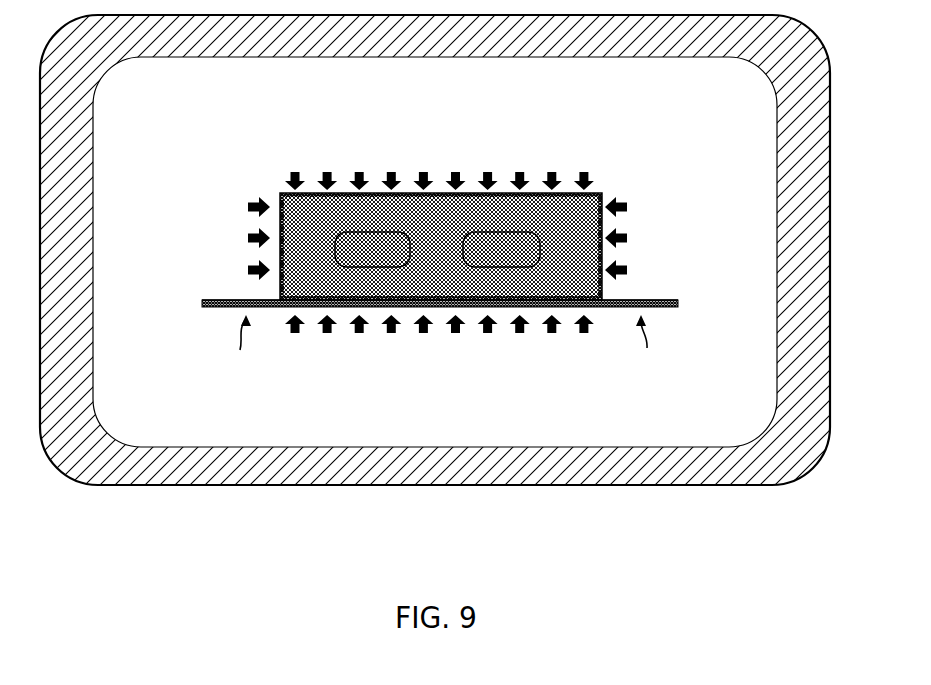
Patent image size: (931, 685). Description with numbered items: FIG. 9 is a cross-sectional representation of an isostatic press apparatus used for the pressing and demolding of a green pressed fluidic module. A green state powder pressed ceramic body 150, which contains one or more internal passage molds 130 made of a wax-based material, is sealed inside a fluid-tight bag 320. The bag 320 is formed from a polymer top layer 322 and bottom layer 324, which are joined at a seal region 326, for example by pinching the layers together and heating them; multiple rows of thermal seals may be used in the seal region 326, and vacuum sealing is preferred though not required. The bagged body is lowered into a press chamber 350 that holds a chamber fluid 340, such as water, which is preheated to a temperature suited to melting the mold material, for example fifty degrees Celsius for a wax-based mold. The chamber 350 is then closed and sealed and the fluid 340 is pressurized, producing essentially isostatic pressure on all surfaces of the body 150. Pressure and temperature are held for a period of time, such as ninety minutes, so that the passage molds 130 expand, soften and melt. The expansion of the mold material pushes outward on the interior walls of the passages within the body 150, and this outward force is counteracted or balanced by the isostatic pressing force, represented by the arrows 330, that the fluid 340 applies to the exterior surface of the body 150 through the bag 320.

The internal passage mold 130 is at (362, 250).
The green state powder pressed ceramic body 150 is at (452, 281).
The fluid-tight bag 320 is at (281, 193).
The top layer 322 is at (227, 300).
The bottom layer 324 is at (204, 307).
The seal region 326 is at (443, 348).
The isostatic pressing force arrows 330 is at (585, 172).
The chamber fluid 340 is at (636, 421).
The press chamber 350 is at (520, 461).